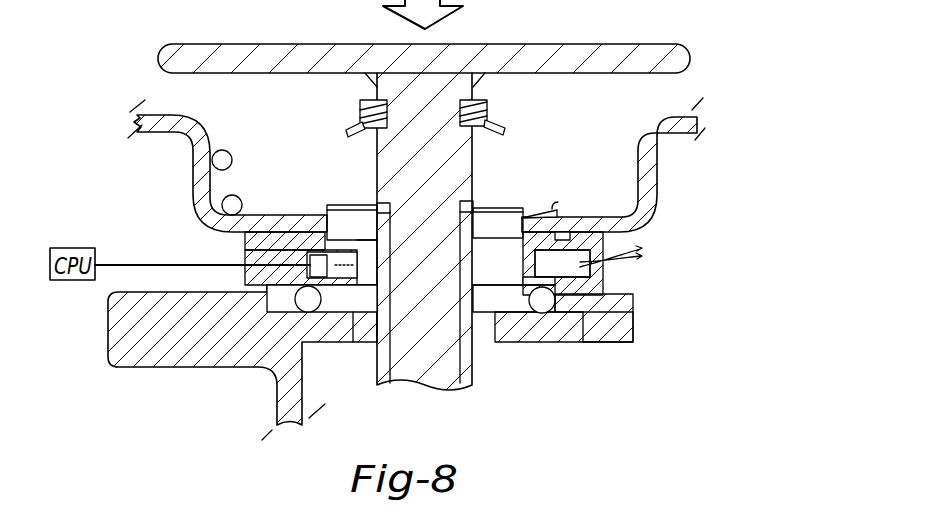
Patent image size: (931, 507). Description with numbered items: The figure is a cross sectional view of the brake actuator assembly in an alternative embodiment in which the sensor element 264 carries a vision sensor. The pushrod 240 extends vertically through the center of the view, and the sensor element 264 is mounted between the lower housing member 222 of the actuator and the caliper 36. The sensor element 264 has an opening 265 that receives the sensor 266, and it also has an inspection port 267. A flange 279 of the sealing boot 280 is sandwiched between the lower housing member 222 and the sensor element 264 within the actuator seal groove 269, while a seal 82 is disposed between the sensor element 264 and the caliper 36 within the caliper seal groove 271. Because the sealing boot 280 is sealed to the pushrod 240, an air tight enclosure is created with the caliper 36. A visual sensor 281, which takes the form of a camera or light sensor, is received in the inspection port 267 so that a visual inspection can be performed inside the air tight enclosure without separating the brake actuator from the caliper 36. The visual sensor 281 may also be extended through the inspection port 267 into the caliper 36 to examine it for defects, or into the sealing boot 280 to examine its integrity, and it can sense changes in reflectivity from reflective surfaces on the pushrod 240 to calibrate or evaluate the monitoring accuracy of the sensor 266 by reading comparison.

The caliper 36 is at (633, 315).
The seal 82 is at (542, 305).
The lower housing member 222 is at (273, 216).
The pushrod 240 is at (437, 167).
The sensor element 264 is at (600, 237).
The opening 265 is at (250, 272).
The sensor 266 is at (335, 262).
The inspection port 267 is at (593, 294).
The actuator seal groove 269 is at (283, 240).
The caliper seal groove 271 is at (568, 303).
The flange 279 is at (324, 205).
The sealing boot 280 is at (500, 124).
The visual sensor 281 is at (590, 265).